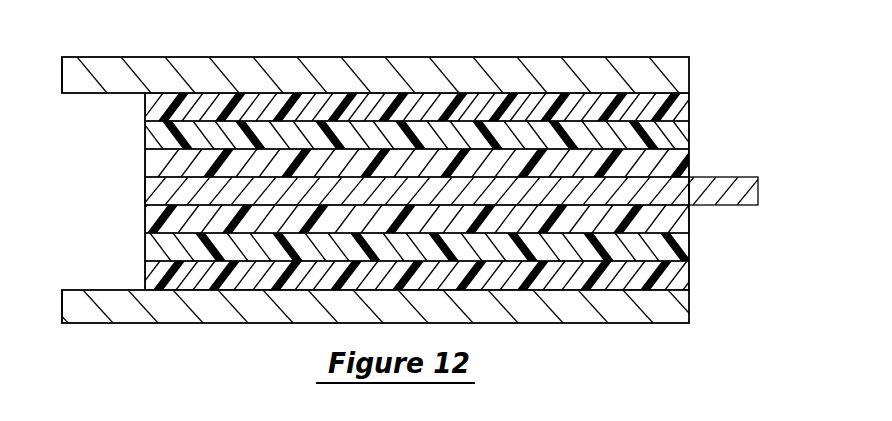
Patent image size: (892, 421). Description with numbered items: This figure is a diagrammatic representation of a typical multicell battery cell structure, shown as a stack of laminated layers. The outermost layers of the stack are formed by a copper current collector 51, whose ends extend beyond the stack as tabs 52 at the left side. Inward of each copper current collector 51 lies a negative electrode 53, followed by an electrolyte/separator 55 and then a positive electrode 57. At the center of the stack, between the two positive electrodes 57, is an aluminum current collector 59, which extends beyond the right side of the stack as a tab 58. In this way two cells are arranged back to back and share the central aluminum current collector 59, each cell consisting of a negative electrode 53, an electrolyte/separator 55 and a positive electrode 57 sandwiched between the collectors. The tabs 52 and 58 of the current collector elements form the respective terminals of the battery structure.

The copper current collector 51 is at (678, 72).
The tab 52 is at (93, 57).
The negative electrode 53 is at (678, 103).
The electrolyte/separator 55 is at (678, 133).
The positive electrode 57 is at (677, 218).
The tab 58 is at (745, 192).
The aluminum current collector 59 is at (157, 192).